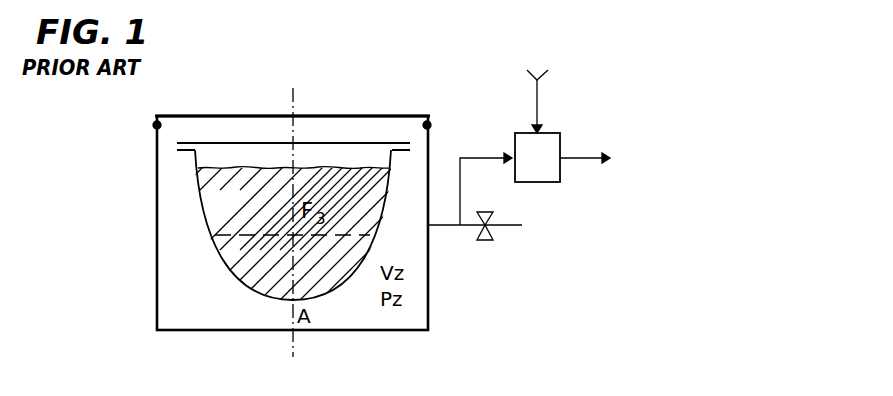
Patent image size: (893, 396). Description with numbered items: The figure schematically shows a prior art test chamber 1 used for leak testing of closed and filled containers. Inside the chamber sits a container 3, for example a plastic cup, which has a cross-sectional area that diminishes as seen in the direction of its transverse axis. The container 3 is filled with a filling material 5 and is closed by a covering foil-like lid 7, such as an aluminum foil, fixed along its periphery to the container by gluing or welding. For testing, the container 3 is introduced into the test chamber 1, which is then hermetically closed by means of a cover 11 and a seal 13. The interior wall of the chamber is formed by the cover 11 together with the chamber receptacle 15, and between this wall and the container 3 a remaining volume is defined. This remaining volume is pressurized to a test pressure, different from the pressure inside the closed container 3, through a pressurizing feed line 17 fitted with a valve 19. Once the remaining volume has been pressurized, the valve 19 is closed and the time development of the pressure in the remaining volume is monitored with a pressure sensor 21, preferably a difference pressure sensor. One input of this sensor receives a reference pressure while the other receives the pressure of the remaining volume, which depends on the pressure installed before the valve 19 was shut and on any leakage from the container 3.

The test chamber 1 is at (440, 292).
The container 3 is at (250, 292).
The filling material 5 is at (228, 208).
The foil-like lid 7 is at (356, 143).
The cover 11 is at (243, 115).
The seal 13 is at (153, 125).
The chamber receptacle 15 is at (157, 292).
The pressurizing feed line 17 is at (505, 228).
The valve 19 is at (482, 240).
The pressure sensor 21 is at (549, 130).